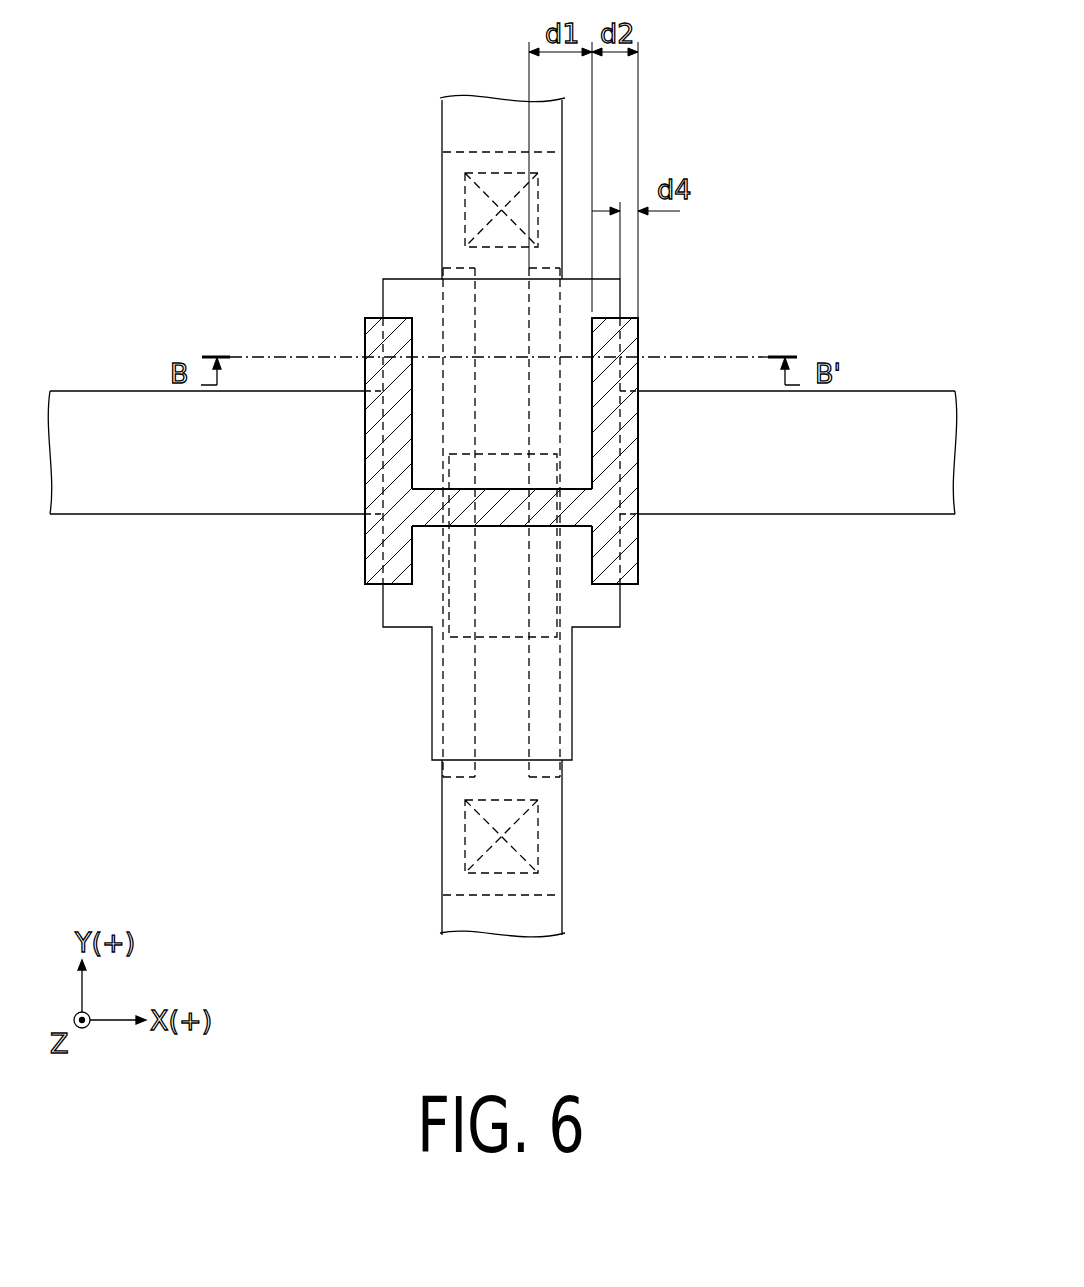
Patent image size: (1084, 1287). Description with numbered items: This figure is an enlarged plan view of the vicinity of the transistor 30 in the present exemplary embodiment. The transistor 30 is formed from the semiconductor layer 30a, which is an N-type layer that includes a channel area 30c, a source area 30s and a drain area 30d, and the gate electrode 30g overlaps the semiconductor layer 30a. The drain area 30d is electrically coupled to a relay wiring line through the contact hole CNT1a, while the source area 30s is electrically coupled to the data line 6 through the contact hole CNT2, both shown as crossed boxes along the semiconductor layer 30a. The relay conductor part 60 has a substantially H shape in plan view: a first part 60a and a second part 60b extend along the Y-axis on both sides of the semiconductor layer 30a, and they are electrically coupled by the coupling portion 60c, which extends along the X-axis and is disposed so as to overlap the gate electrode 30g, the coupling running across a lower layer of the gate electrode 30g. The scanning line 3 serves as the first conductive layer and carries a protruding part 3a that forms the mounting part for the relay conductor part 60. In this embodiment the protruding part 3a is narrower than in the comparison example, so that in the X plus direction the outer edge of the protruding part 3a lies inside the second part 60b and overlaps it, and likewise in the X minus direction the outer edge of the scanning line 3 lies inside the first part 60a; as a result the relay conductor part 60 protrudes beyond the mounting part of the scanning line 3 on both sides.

The scanning line 3 is at (923, 398).
The protruding part 3a is at (405, 290).
The data line 6 is at (468, 100).
The transistor 30 is at (340, 544).
The semiconductor layer 30a is at (490, 320).
The channel area 30c is at (502, 598).
The drain area 30d is at (450, 230).
The gate electrode 30g is at (445, 620).
The source area 30s is at (450, 797).
The relay conductor part 60 is at (512, 446).
The first part 60a is at (367, 345).
The second part 60b is at (640, 337).
The coupling portion 60c is at (497, 512).
The contact hole CNT1a is at (470, 193).
The contact hole CNT2 is at (470, 848).